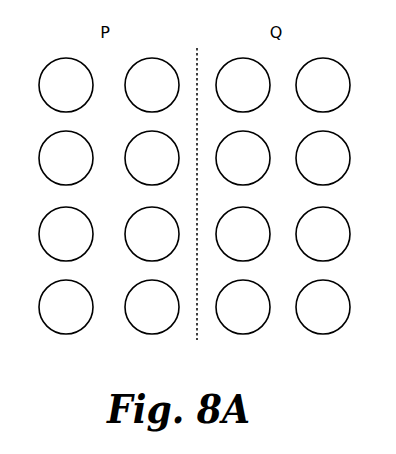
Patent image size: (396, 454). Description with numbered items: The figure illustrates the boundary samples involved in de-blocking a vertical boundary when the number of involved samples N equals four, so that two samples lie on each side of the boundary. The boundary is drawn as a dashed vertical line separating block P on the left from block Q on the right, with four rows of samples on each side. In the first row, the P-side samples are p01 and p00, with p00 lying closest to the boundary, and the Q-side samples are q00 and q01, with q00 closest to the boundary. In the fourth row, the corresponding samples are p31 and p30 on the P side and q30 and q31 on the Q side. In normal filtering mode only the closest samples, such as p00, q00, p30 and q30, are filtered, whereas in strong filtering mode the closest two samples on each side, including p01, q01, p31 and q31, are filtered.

The boundary sample p01 is at (66, 85).
The boundary sample p00 is at (152, 85).
The boundary sample q00 is at (243, 85).
The boundary sample q01 is at (323, 85).
The boundary sample p31 is at (66, 307).
The boundary sample p30 is at (152, 307).
The boundary sample q30 is at (243, 307).
The boundary sample q31 is at (323, 307).